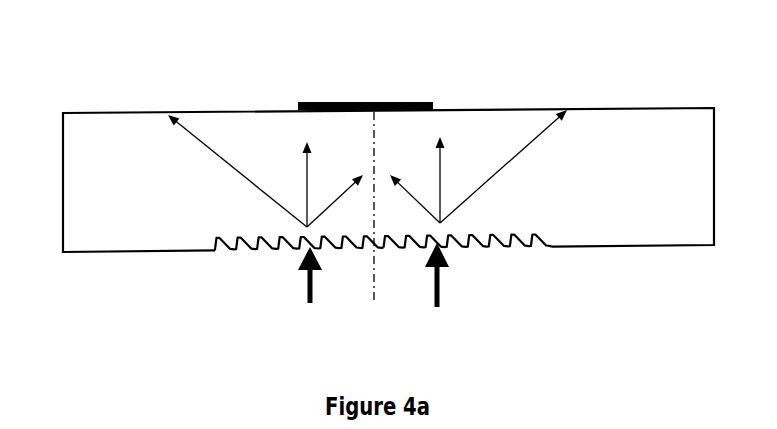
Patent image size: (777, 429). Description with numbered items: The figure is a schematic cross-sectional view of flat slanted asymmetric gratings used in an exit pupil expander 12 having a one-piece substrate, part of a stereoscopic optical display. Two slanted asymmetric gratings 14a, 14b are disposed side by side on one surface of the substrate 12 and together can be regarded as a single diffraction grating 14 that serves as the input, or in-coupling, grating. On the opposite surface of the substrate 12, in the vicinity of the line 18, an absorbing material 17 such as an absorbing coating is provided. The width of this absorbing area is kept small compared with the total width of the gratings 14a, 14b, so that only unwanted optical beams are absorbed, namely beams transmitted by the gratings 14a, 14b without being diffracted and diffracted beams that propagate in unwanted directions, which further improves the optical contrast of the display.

The exit pupil expander 12 is at (607, 127).
The absorbing material 17 is at (418, 100).
The diffraction grating 14 is at (466, 295).
The slanted asymmetric grating 14a is at (253, 247).
The slanted asymmetric grating 14b is at (465, 245).
The line 18 is at (370, 285).